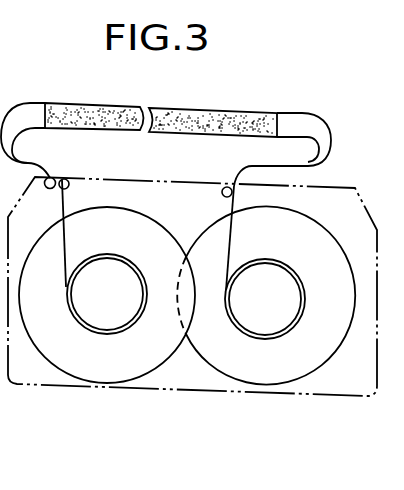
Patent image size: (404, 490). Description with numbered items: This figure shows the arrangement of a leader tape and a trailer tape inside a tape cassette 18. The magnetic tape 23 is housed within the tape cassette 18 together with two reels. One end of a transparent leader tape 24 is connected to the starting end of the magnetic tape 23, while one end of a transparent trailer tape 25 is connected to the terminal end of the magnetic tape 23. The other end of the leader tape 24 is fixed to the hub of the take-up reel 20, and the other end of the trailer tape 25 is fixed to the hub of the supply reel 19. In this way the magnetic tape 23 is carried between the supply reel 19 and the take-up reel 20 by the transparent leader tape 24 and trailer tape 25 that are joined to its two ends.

The tape cassette 18 is at (367, 198).
The supply reel 19 is at (270, 377).
The take-up reel 20 is at (112, 370).
The magnetic tape 23 is at (201, 110).
The leader tape 24 is at (24, 114).
The trailer tape 25 is at (295, 119).